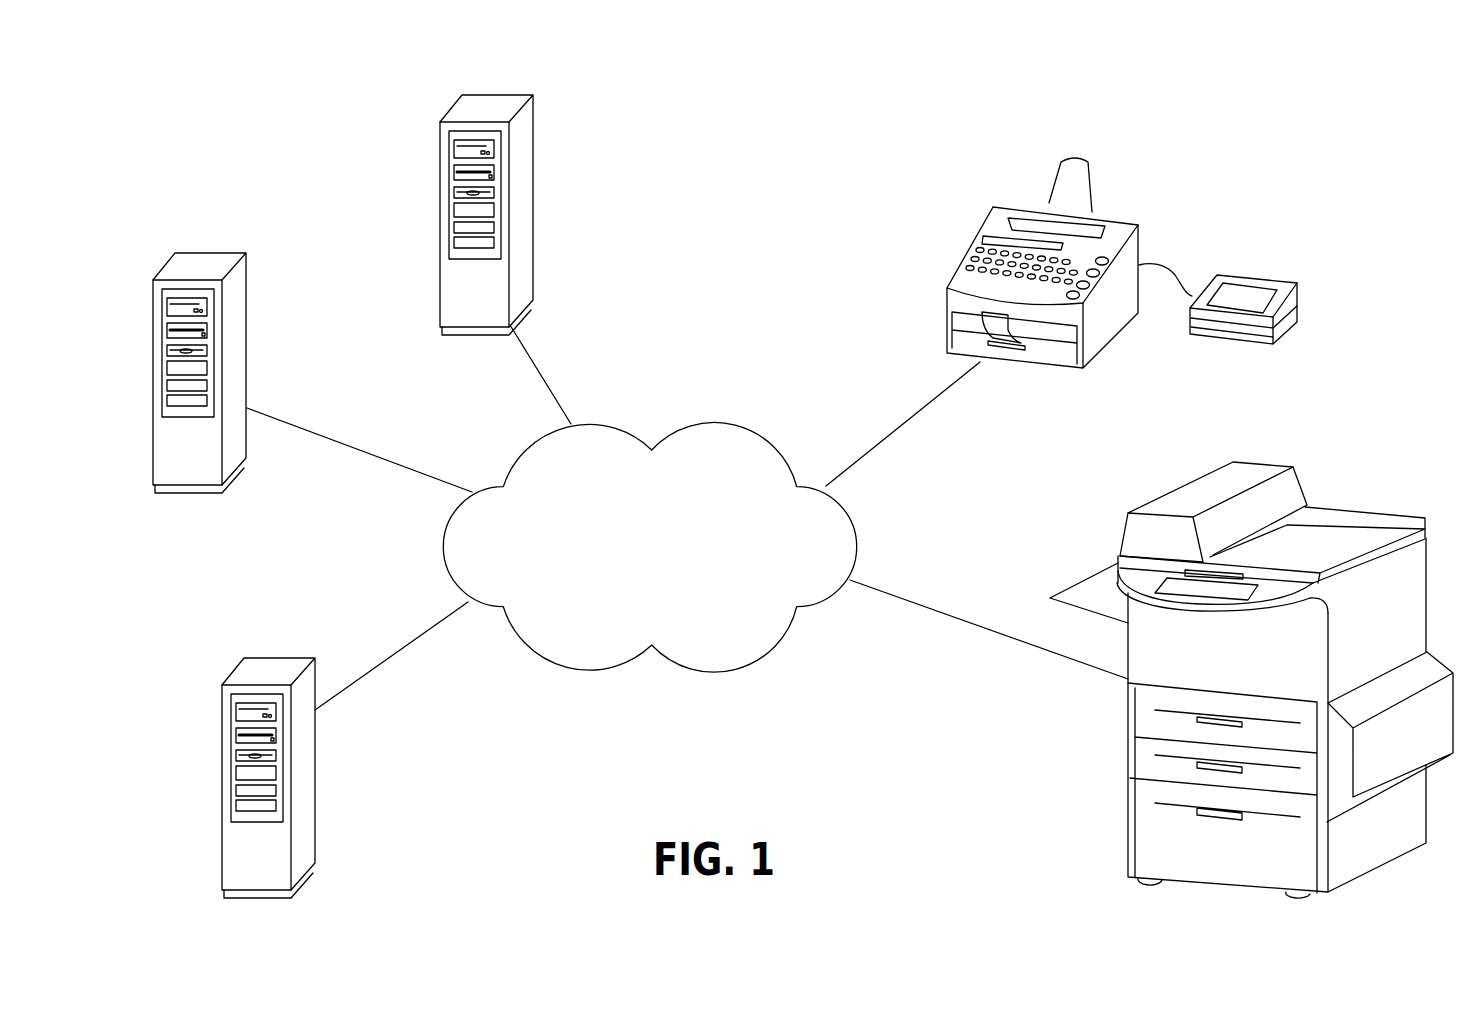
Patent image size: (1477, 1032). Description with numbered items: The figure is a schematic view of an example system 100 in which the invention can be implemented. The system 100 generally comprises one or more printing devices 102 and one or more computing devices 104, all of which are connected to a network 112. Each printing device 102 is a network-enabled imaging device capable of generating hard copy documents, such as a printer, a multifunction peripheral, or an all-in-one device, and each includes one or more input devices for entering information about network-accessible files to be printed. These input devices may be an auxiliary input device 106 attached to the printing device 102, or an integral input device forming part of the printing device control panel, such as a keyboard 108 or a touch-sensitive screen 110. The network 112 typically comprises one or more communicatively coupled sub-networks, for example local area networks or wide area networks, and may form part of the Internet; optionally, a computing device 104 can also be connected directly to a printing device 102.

The system 100 is at (1391, 123).
The printing device 102 is at (1183, 505).
The computing device 104 is at (289, 269).
The auxiliary input device 106 is at (1291, 327).
The keyboard 108 is at (956, 250).
The touch-sensitive screen 110 is at (1182, 585).
The network 112 is at (670, 572).